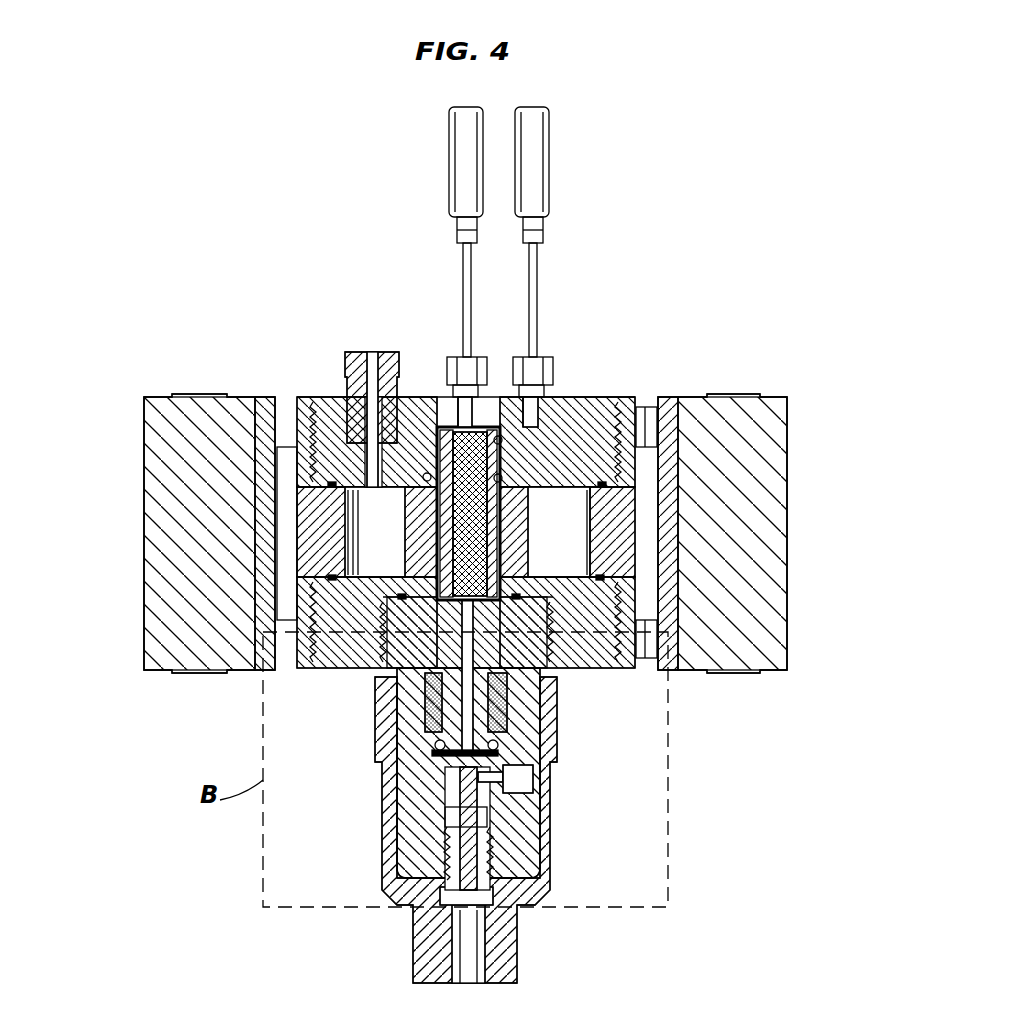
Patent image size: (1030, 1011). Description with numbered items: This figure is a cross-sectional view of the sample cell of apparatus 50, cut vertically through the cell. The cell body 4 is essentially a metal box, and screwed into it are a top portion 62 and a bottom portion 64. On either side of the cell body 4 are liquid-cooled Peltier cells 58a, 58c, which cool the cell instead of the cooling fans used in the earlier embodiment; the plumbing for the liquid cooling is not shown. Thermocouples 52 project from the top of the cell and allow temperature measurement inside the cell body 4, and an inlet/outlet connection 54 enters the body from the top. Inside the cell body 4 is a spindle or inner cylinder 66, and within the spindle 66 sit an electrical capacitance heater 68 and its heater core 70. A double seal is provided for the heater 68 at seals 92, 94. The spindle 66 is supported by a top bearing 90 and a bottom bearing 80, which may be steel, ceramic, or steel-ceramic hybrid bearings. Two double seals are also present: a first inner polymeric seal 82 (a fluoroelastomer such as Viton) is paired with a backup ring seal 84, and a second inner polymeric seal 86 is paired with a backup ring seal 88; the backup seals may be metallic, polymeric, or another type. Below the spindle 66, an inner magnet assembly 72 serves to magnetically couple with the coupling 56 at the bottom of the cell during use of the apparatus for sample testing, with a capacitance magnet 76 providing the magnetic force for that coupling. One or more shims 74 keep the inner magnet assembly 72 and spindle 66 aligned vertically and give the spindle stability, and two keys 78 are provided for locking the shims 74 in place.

The apparatus 50 is at (655, 134).
The thermocouples 52 is at (525, 187).
The inlet/outlet connection 54 is at (356, 352).
The cell body 4 is at (597, 486).
The coupling 56 is at (520, 940).
The liquid-cooled Peltier cell 58a is at (787, 543).
The liquid-cooled Peltier cell 58c is at (144, 475).
The top portion 62 is at (580, 452).
The bottom portion 64 is at (598, 636).
The spindle 66 is at (512, 692).
The electrical heater 68 is at (437, 537).
The heater core 70 is at (437, 440).
The inner magnet assembly 72 is at (425, 691).
The shims 74 is at (500, 722).
The capacitance magnet 76 is at (413, 807).
The keys 78 is at (435, 725).
The bottom bearing 80 is at (497, 748).
The inner polymeric seal 82 is at (400, 595).
The backup ring seal 84 is at (318, 540).
The inner polymeric seal 86 is at (498, 478).
The backup ring seal 88 is at (702, 454).
The top bearing 90 is at (530, 513).
The heater seal 92 is at (503, 438).
The heater seal 94 is at (563, 354).